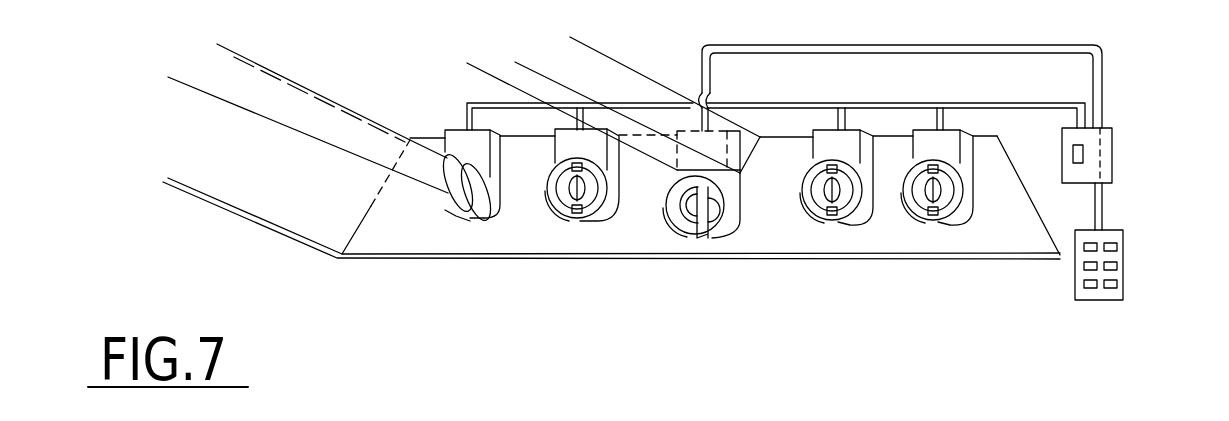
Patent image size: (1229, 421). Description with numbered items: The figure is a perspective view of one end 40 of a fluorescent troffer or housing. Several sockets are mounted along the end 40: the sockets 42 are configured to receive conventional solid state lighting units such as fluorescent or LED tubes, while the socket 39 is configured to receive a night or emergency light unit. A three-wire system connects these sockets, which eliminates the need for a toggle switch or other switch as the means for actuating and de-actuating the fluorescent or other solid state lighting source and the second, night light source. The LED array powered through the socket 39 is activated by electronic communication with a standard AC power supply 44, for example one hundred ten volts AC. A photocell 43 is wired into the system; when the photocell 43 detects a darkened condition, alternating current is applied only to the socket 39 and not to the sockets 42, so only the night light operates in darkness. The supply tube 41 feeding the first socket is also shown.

The socket 39 is at (698, 241).
The end of the troffer 40 is at (522, 264).
The supply tube 41 is at (343, 143).
The sockets 42 is at (856, 225).
The photocell 43 is at (1108, 163).
The AC power supply 44 is at (1120, 258).